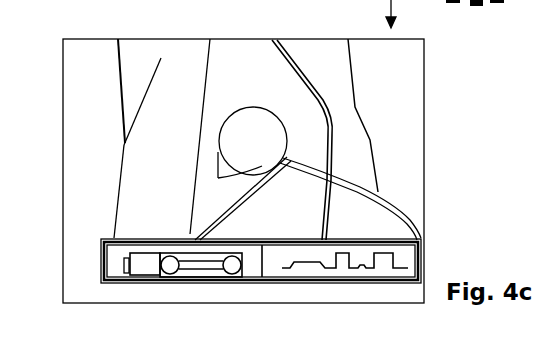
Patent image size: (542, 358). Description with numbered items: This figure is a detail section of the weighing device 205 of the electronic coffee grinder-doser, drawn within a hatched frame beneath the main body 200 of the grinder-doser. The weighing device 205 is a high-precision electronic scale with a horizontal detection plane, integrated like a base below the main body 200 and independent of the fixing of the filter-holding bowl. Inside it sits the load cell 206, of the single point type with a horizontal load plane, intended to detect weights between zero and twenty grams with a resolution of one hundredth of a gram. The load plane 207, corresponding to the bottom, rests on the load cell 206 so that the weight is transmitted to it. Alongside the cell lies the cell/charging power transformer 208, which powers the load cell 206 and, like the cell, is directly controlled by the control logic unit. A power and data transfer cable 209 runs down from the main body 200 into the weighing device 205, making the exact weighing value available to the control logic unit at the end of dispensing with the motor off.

The main body of the grinder-doser 200 is at (160, 56).
The weighing device 205 is at (101, 262).
The load cell 206 is at (187, 271).
The load plane 207 is at (138, 238).
The cell/charging power transformer 208 is at (331, 266).
The power and data transfer cable 209 is at (319, 101).